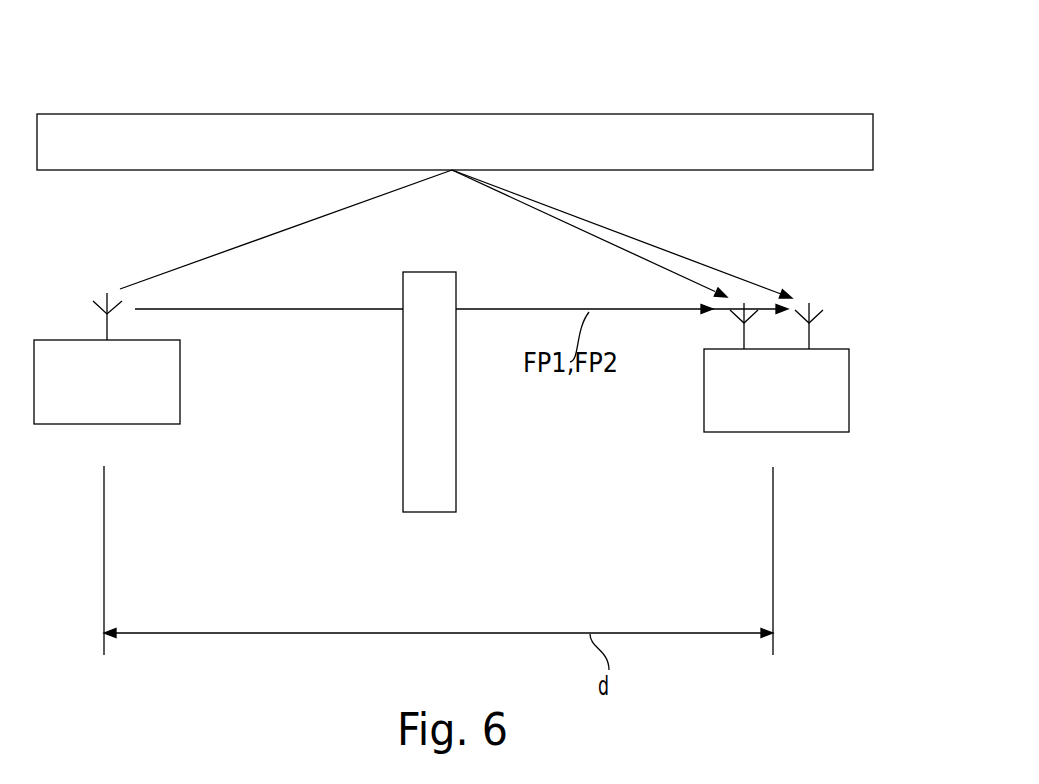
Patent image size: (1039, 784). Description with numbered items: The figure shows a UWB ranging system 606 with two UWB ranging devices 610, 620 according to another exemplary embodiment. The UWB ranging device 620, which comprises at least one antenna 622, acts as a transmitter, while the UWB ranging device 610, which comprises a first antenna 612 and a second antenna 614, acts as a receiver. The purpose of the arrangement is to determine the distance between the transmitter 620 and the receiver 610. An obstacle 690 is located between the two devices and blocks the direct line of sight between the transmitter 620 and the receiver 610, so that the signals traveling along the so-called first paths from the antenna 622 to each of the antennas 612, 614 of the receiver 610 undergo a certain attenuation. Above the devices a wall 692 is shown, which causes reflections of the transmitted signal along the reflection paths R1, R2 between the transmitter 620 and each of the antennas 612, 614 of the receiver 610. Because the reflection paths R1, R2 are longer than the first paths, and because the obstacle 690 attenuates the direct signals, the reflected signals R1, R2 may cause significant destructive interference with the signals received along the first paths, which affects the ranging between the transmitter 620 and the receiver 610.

The UWB ranging system 606 is at (102, 71).
The wall 692 is at (90, 171).
The obstacle 690 is at (425, 513).
The UWB ranging device 620 is at (150, 425).
The antenna 622 is at (104, 325).
The UWB ranging device 610 is at (818, 433).
The first antenna 612 is at (744, 325).
The second antenna 614 is at (809, 325).
The reflection path R1 is at (594, 237).
The reflection path R2 is at (725, 267).